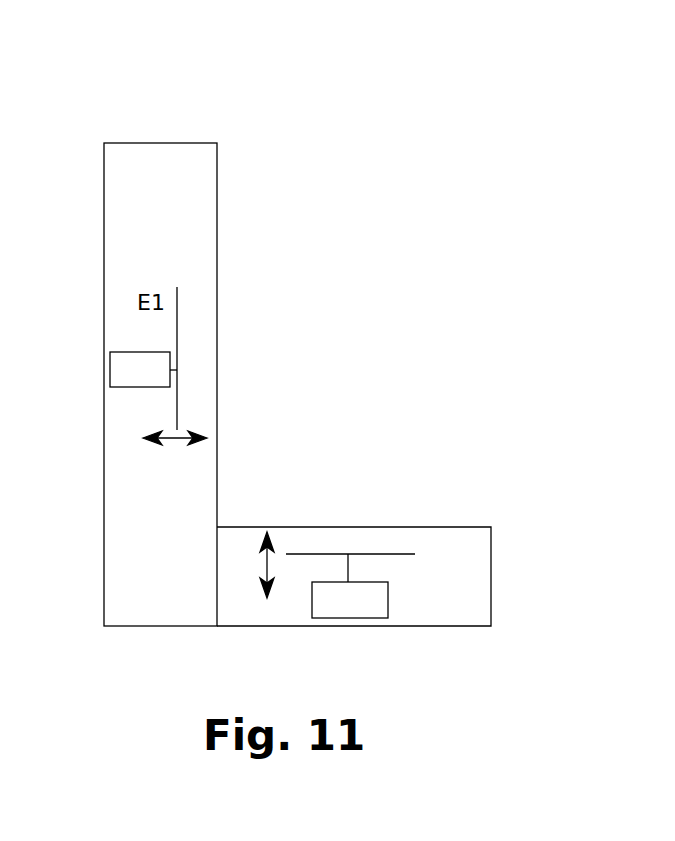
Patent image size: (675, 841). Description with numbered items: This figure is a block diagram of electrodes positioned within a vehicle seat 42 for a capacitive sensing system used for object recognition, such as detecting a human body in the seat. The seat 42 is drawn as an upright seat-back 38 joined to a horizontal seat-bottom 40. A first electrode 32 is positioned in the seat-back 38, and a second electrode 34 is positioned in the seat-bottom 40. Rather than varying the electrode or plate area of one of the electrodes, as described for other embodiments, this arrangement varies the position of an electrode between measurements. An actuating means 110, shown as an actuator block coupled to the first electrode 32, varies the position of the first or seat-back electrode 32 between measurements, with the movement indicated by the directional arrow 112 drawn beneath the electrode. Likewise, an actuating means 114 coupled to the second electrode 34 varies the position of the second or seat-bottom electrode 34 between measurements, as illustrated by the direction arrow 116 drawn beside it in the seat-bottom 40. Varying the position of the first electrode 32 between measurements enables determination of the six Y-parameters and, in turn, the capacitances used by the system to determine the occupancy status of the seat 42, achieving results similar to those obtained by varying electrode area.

The seat 42 is at (312, 336).
The seat-back 38 is at (217, 190).
The seat-bottom 40 is at (491, 600).
The first electrode 32 is at (177, 352).
The second electrode 34 is at (340, 554).
The actuating means 110 is at (132, 352).
The directional arrow 112 is at (175, 447).
The actuating means 114 is at (347, 618).
The direction arrow 116 is at (252, 568).